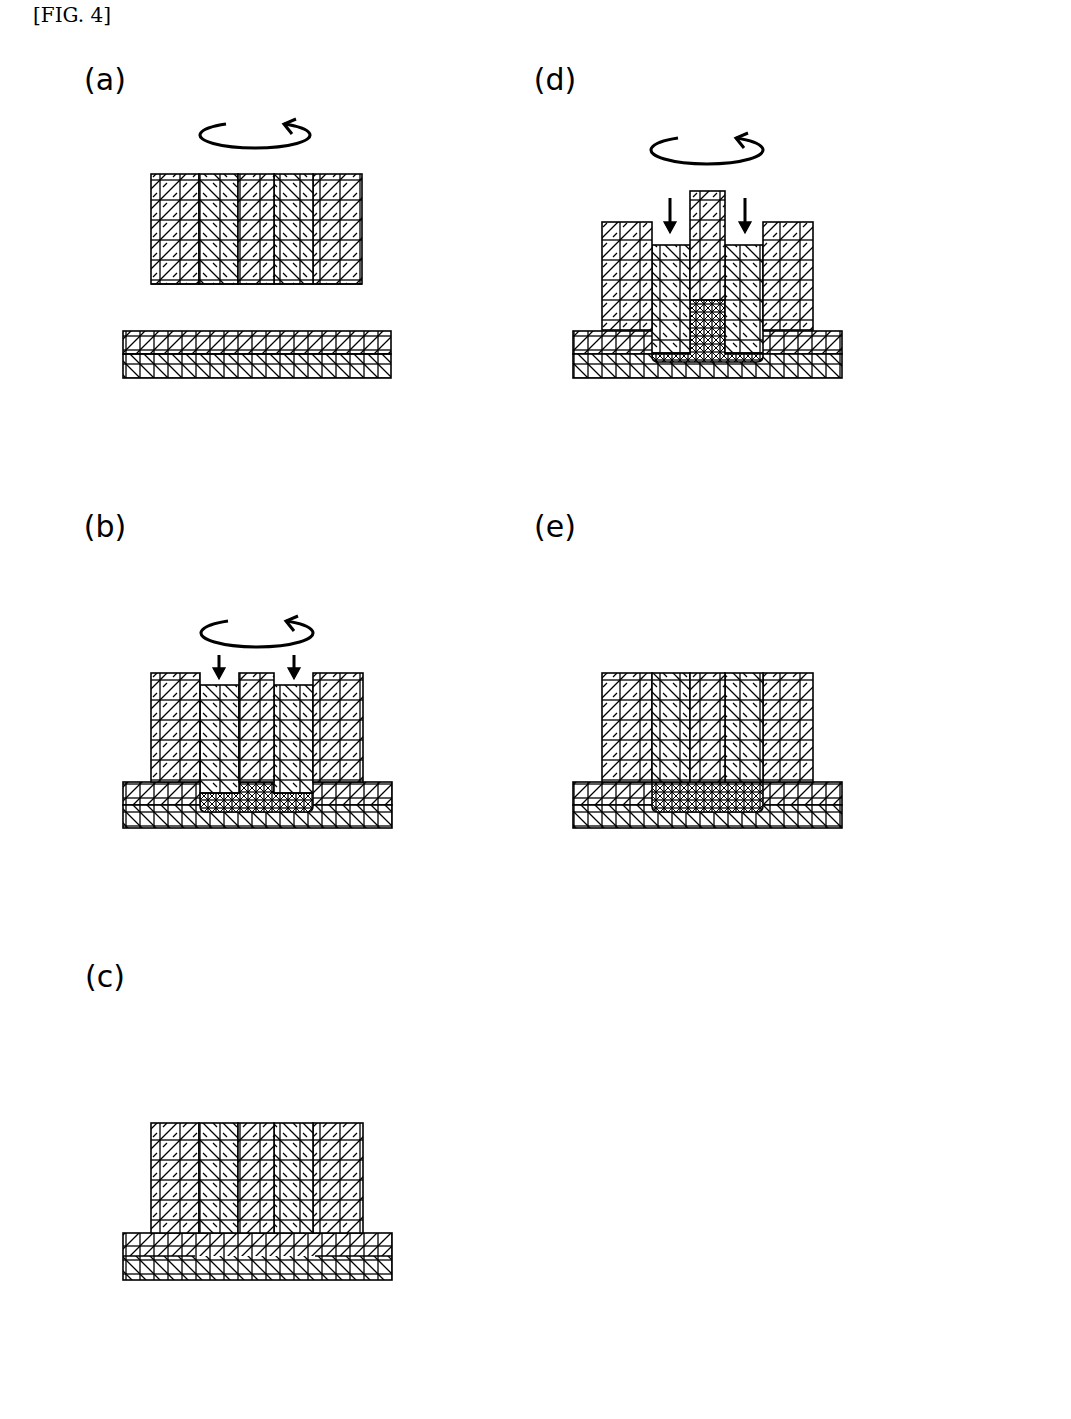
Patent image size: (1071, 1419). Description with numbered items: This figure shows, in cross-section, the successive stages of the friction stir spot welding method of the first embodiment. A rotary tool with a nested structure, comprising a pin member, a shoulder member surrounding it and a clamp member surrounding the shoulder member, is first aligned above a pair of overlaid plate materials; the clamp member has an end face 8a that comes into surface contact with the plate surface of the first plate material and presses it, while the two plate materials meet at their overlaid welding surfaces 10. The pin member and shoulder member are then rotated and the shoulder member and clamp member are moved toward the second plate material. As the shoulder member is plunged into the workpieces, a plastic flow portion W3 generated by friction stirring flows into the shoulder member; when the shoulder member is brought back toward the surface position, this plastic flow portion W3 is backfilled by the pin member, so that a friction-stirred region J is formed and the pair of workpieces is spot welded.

The end face 8a is at (337, 284).
The abutting interface 10 is at (268, 356).
The plastic flow portion W3 is at (707, 363).
The friction-stirred region J is at (712, 812).